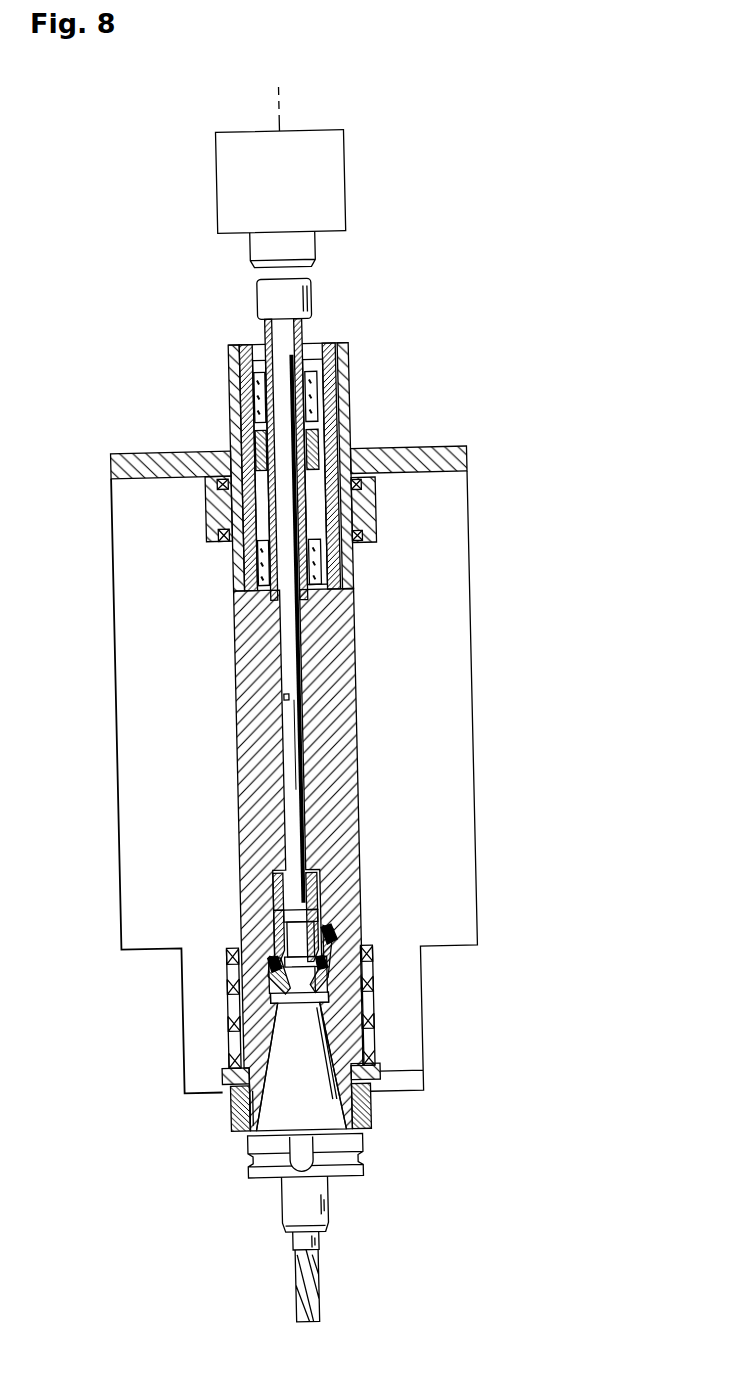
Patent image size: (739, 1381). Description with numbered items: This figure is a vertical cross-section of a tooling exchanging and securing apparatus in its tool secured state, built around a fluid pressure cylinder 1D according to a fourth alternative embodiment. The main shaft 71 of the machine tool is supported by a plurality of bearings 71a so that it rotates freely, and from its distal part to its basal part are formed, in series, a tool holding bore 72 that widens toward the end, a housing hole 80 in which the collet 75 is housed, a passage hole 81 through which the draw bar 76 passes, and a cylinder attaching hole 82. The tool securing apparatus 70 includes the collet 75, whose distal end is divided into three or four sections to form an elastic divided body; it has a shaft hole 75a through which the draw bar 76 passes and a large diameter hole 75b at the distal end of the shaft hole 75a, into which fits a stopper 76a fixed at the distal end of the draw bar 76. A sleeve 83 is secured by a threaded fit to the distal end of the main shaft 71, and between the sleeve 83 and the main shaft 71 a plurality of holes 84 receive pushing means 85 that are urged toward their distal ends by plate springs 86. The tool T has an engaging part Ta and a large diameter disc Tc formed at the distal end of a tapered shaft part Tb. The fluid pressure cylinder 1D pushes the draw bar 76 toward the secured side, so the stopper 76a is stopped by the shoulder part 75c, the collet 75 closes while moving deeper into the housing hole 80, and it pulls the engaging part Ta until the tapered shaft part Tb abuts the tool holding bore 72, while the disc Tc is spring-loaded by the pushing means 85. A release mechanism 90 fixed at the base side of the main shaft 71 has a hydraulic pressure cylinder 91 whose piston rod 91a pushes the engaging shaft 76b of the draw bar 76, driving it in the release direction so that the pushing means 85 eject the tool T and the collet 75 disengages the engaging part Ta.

The hydraulic pressure cylinder 91 is at (358, 151).
The piston rod 91a is at (260, 244).
The engaging shaft 76b is at (320, 300).
The release mechanism 90 is at (398, 199).
The tool securing apparatus 70 is at (482, 381).
The fluid pressure cylinder 1D is at (236, 379).
The cylinder attaching hole 82 is at (331, 411).
The bearings 71a is at (222, 534).
The main shaft 71 is at (356, 652).
The passage hole 81 is at (285, 697).
The draw bar 76 is at (286, 775).
The housing hole 80 is at (268, 905).
The stopper 76a is at (268, 925).
The shaft hole 75a is at (332, 876).
The shoulder part 75c is at (323, 936).
The large diameter hole 75b is at (326, 969).
The collet 75 is at (330, 975).
The engaging part Ta is at (234, 962).
The tapered shaft part Tb is at (368, 1045).
The large diameter disc Tc is at (242, 1171).
The tool T is at (342, 1209).
The tool holding bore 72 is at (219, 1062).
The plate springs 86 is at (231, 1089).
The holes 84 is at (223, 1116).
The sleeve 83 is at (368, 1120).
The pushing means 85 is at (368, 1135).